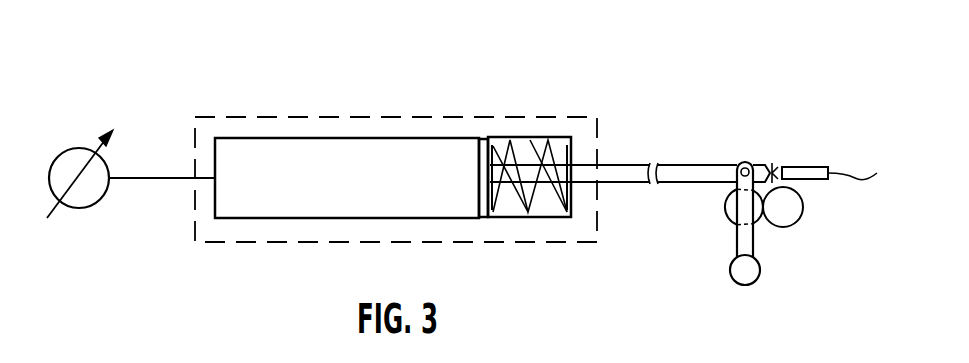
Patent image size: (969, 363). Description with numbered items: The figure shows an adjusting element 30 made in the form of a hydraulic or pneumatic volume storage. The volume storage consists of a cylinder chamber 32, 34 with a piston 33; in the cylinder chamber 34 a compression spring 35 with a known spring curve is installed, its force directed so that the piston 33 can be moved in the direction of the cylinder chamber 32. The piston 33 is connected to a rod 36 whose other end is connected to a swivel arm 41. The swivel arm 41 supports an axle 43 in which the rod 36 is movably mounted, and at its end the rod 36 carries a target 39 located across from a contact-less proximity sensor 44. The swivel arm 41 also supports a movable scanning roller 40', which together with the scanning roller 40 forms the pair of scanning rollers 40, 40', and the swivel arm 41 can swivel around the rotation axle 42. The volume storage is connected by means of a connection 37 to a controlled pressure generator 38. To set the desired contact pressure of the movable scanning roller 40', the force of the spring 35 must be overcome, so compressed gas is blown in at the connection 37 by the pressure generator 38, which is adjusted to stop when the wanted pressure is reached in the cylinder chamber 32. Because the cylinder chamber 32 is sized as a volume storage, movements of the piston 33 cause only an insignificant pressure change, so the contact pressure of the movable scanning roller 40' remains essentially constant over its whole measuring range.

The adjusting element 30 is at (254, 117).
The cylinder chamber 32 is at (360, 150).
The piston 33 is at (484, 140).
The cylinder chamber 34 is at (529, 148).
The compression spring 35 is at (533, 200).
The rod 36 is at (620, 176).
The connection 37 is at (147, 180).
The pressure generator 38 is at (80, 208).
The target 39 is at (772, 165).
The scanning roller 40 is at (806, 213).
The movable scanning roller 40' is at (719, 214).
The swivel arm 41 is at (752, 240).
The rotation axle 42 is at (757, 275).
The axle 43 is at (742, 165).
The contact-less proximity sensor 44 is at (812, 167).